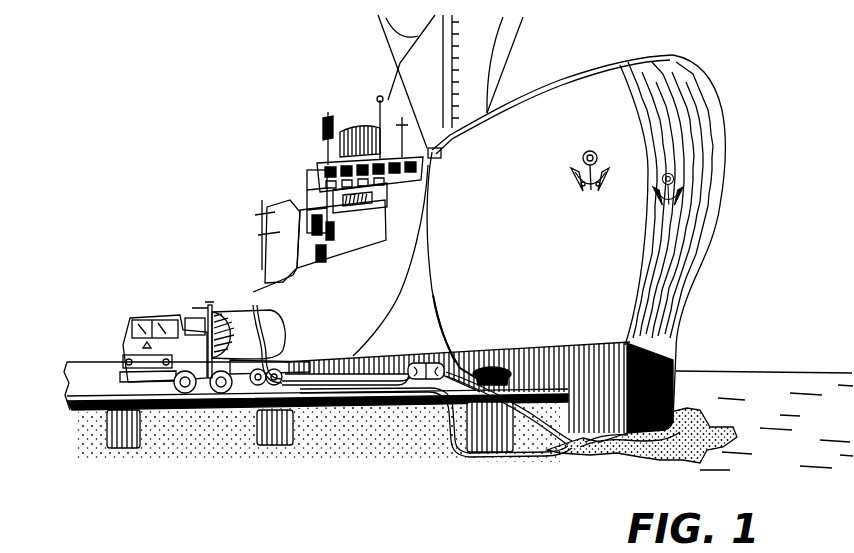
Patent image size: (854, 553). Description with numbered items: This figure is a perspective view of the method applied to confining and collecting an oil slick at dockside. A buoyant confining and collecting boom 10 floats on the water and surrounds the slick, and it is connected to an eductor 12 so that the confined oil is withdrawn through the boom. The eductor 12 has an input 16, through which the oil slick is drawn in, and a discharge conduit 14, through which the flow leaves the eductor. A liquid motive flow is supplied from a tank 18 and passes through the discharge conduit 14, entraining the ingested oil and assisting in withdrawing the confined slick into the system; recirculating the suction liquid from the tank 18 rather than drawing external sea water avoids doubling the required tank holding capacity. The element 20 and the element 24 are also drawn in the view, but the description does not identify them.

The buoyant confining and collecting boom 10 is at (687, 417).
The eductor 12 is at (580, 447).
The discharge conduit 14 is at (487, 455).
The input 16 is at (460, 350).
The tank 18 is at (233, 308).
The vessel hull 20 is at (679, 277).
The containment boom 24 is at (663, 440).